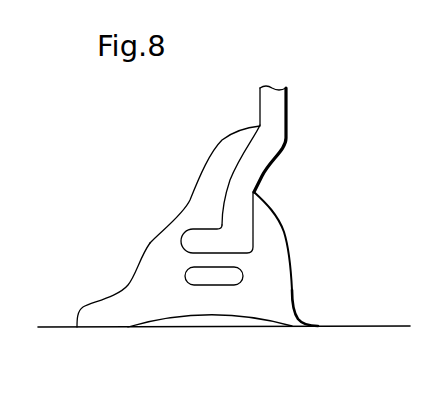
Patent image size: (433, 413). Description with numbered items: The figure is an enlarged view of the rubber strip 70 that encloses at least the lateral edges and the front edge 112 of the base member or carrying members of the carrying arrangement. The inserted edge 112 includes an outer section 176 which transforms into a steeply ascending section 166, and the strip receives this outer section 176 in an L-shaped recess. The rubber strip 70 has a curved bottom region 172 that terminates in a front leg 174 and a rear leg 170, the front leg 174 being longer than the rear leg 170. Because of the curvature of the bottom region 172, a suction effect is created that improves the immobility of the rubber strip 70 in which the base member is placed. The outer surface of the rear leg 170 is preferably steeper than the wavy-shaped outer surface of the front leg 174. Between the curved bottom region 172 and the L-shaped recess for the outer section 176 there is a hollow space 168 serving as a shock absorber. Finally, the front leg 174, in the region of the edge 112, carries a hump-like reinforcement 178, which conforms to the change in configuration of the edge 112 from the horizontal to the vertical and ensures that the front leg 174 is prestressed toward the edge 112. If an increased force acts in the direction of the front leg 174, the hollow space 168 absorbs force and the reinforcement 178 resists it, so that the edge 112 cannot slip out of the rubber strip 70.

The rubber strip 70 is at (119, 151).
The front edge 112 is at (273, 157).
The steeply ascending section 166 is at (243, 212).
The hollow space 168 is at (242, 277).
The rear leg 170 is at (285, 298).
The curved bottom region 172 is at (222, 315).
The front leg 174 is at (103, 312).
The outer section 176 is at (191, 237).
The reinforcement 178 is at (202, 188).